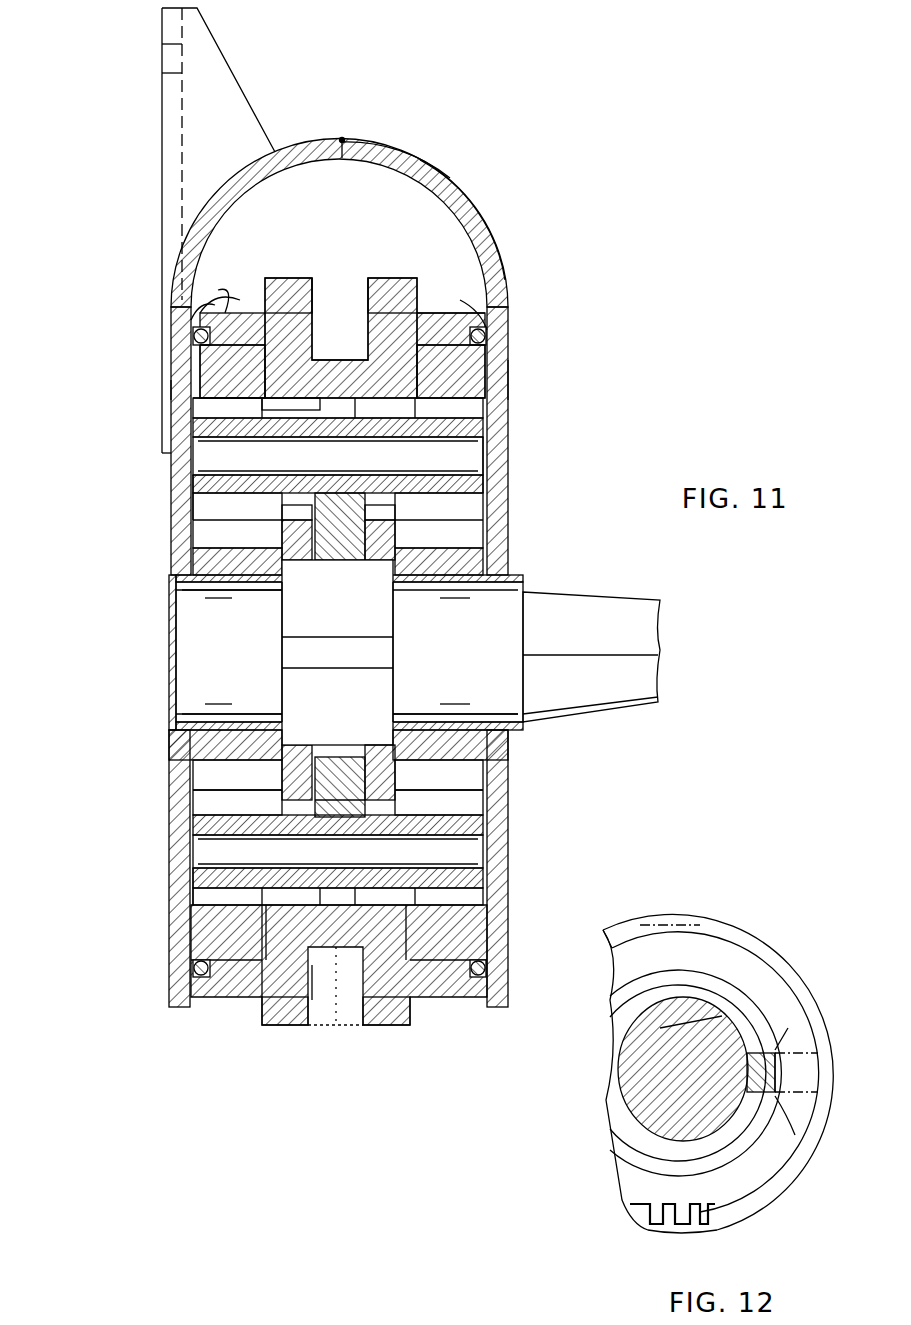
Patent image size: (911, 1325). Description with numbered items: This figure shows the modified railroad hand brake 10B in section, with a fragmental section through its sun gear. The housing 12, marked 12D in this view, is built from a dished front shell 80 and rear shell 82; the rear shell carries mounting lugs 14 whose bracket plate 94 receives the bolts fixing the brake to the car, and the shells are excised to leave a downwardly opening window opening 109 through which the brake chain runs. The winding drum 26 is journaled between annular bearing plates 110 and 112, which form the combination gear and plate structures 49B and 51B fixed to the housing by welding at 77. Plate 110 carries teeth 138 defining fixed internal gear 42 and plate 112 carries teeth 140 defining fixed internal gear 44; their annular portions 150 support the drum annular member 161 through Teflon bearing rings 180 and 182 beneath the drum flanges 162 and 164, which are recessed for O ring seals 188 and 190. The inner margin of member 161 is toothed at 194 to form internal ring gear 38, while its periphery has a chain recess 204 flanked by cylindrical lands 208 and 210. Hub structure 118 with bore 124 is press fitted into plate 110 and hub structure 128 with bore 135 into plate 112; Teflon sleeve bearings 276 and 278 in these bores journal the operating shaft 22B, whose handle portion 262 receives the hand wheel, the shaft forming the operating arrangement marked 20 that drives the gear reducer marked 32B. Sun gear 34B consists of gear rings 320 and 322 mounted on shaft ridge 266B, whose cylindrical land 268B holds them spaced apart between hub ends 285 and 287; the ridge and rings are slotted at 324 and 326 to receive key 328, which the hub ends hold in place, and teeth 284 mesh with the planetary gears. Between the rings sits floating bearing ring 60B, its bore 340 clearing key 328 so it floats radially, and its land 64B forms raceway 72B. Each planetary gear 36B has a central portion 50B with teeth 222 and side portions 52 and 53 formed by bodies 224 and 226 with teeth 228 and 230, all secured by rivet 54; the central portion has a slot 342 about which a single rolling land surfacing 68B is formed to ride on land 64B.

In FIG. 11, the hand brake 10B is at (568, 176).
In FIG. 11, the housing 12 is at (312, 453).
In FIG. 11, the housing 12D is at (448, 162).
In FIG. 11, the mounting lugs 14 is at (258, 64).
In FIG. 11, the stator 20 is at (462, 268).
In FIG. 11, the operating shaft 22B is at (520, 580).
In FIG. 12, the operating shaft 22B is at (725, 1015).
In FIG. 11, the winding drum 26 is at (418, 268).
In FIG. 11, the upper chamber 32B is at (200, 530).
In FIG. 11, the sun gear 34B is at (485, 502).
In FIG. 11, the planetary gear assemblies 36B is at (488, 417).
In FIG. 11, the internal ring gear 38 is at (340, 948).
In FIG. 11, the fixed internal ring gear 42 is at (220, 380).
In FIG. 11, the fixed internal ring gear 44 is at (465, 390).
In FIG. 11, the combination gear and plate structure 49B is at (171, 390).
In FIG. 11, the central portion 50B is at (322, 398).
In FIG. 11, the combination gear and plate structure 51B is at (508, 390).
In FIG. 11, the side portion 52 is at (210, 500).
In FIG. 11, the side portion 53 is at (482, 482).
In FIG. 11, the rivet 54 is at (480, 448).
In FIG. 11, the floating bearing ring 60B is at (337, 652).
In FIG. 11, the bearing land 64B is at (352, 802).
In FIG. 12, the bearing land 64B is at (745, 935).
In FIG. 11, the rolling land surfacing 68B is at (428, 790).
In FIG. 11, the raceway 72B is at (345, 505).
In FIG. 11, the welding 77 is at (540, 922).
In FIG. 11, the front housing plate 80 is at (455, 185).
In FIG. 11, the rear housing plate 82 is at (306, 145).
In FIG. 11, the bracket plate 94 is at (205, 58).
In FIG. 11, the window opening 109 is at (312, 1048).
In FIG. 11, the bearing plate 110 is at (205, 352).
In FIG. 11, the bearing plate 112 is at (478, 395).
In FIG. 11, the hub structure 118 is at (168, 742).
In FIG. 11, the bore 124 is at (196, 720).
In FIG. 11, the hub structure 128 is at (512, 742).
In FIG. 11, the bore 135 is at (465, 726).
In FIG. 11, the gear teeth 138 is at (208, 400).
In FIG. 11, the gear teeth 140 is at (508, 373).
In FIG. 11, the annular portion 150 is at (230, 965).
In FIG. 11, the annular member 161 is at (288, 310).
In FIG. 11, the flange portion 162 is at (200, 285).
In FIG. 11, the flange portion 164 is at (490, 315).
In FIG. 11, the bearing ring 180 is at (246, 305).
In FIG. 11, the bearing ring 182 is at (470, 335).
In FIG. 11, the O ring seal 188 is at (197, 330).
In FIG. 11, the O ring seal 190 is at (470, 380).
In FIG. 11, the teeth 194 is at (372, 312).
In FIG. 11, the recess 204 is at (345, 1017).
In FIG. 11, the cylindrical land 208 is at (282, 1027).
In FIG. 11, the cylindrical land 210 is at (400, 1027).
In FIG. 11, the gear teeth 222 is at (265, 796).
In FIG. 11, the body 224 is at (205, 882).
In FIG. 11, the body 226 is at (482, 876).
In FIG. 11, the gear teeth 228 is at (205, 812).
In FIG. 11, the gear teeth 230 is at (466, 812).
In FIG. 11, the handle portion 262 is at (662, 592).
In FIG. 11, the operating shaft ridge 266B is at (280, 605).
In FIG. 12, the operating shaft ridge 266B is at (742, 1185).
In FIG. 11, the cylindrical land 268B is at (390, 620).
In FIG. 11, the sleeve type bearing 276 is at (200, 592).
In FIG. 11, the sleeve type bearing 278 is at (510, 608).
In FIG. 11, the gear teeth 284 is at (375, 558).
In FIG. 12, the gear teeth 284 is at (700, 1220).
In FIG. 11, the inner end 285 is at (265, 740).
In FIG. 11, the inner end 287 is at (405, 742).
In FIG. 11, the gear ring 320 is at (206, 555).
In FIG. 12, the gear ring 320 is at (738, 1185).
In FIG. 11, the gear ring 322 is at (410, 530).
In FIG. 11, the slot 324 is at (375, 668).
In FIG. 12, the slot 324 is at (735, 1128).
In FIG. 12, the slot 326 is at (770, 1068).
In FIG. 12, the key 328 is at (768, 1058).
In FIG. 11, the bore 340 is at (345, 752).
In FIG. 12, the bore 340 is at (694, 975).
In FIG. 11, the central recess 342 is at (265, 960).